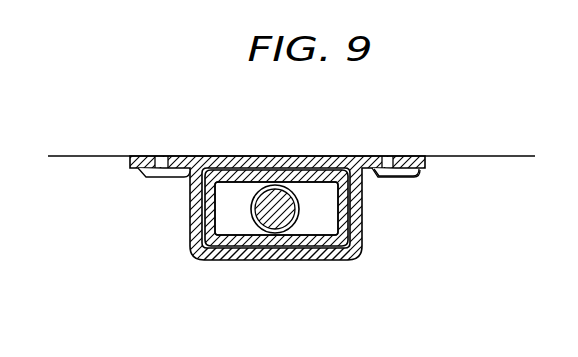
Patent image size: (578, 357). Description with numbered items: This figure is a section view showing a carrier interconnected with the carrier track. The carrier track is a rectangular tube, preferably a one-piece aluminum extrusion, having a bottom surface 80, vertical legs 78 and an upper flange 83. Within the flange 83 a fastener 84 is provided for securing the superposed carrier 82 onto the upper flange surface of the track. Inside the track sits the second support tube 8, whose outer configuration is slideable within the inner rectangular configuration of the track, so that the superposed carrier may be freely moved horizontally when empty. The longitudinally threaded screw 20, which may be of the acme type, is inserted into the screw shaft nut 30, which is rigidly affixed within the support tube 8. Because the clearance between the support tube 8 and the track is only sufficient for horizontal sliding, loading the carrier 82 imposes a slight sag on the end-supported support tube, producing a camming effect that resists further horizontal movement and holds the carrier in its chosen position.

The second support tube 8 is at (241, 176).
The longitudinally threaded screw 20 is at (293, 191).
The screw shaft nut 30 is at (227, 200).
The vertical legs 78 is at (363, 213).
The bottom surface 80 is at (221, 259).
The superposed carrier 82 is at (492, 156).
The upper flange 83 is at (367, 155).
The fastener 84 is at (403, 178).